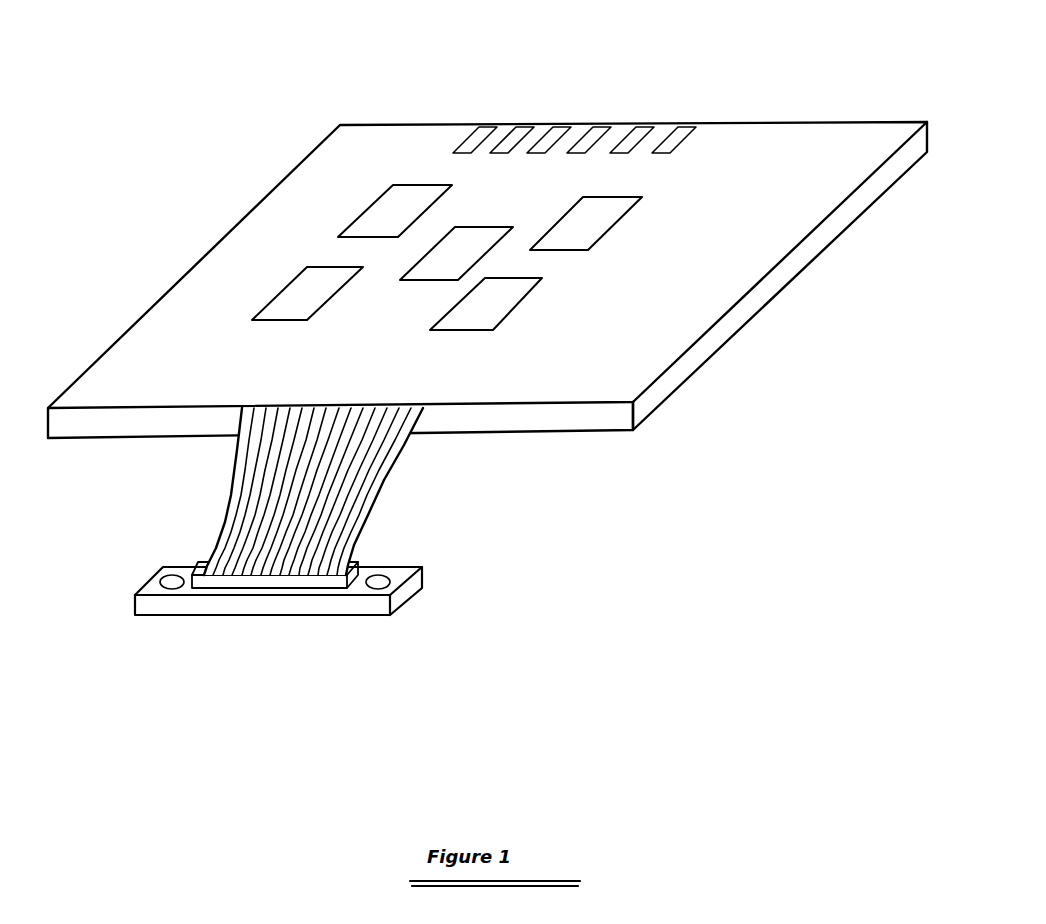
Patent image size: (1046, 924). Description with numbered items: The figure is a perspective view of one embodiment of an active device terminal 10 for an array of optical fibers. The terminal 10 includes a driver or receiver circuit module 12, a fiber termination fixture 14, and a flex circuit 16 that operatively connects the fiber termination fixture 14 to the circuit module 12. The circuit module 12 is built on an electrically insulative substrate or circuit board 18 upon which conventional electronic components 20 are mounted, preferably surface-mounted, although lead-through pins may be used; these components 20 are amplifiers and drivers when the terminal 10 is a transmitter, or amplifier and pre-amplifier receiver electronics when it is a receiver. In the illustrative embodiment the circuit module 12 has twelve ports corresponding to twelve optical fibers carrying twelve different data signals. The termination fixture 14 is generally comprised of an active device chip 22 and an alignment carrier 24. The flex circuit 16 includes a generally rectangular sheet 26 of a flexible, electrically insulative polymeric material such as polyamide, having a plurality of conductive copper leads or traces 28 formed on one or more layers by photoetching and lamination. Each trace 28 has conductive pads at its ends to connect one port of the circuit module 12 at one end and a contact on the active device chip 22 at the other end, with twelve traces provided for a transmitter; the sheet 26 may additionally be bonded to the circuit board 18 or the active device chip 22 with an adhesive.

The active device terminal 10 is at (177, 213).
The circuit module 12 is at (487, 306).
The fiber termination fixture 14 is at (306, 635).
The flex circuit 16 is at (324, 491).
The circuit board 18 is at (128, 422).
The electronic components 20 is at (593, 200).
The active device chip 22 is at (192, 582).
The alignment carrier 24 is at (417, 590).
The sheet 26 is at (383, 482).
The traces 28 is at (260, 497).